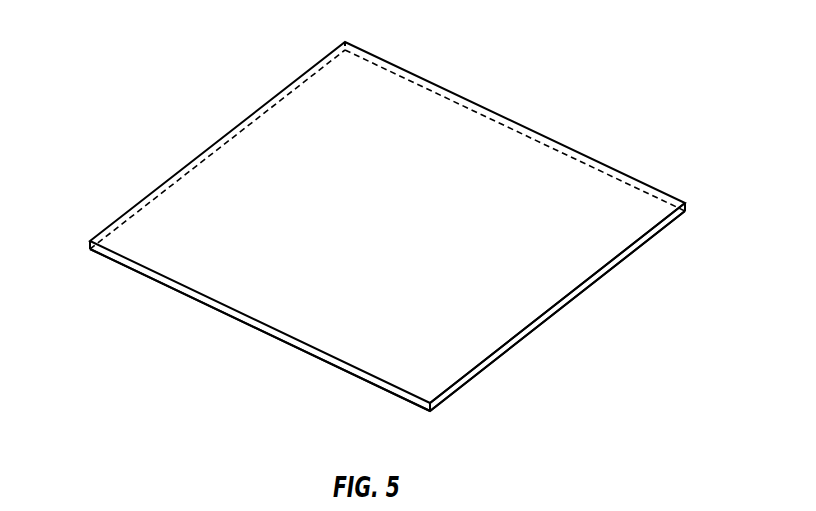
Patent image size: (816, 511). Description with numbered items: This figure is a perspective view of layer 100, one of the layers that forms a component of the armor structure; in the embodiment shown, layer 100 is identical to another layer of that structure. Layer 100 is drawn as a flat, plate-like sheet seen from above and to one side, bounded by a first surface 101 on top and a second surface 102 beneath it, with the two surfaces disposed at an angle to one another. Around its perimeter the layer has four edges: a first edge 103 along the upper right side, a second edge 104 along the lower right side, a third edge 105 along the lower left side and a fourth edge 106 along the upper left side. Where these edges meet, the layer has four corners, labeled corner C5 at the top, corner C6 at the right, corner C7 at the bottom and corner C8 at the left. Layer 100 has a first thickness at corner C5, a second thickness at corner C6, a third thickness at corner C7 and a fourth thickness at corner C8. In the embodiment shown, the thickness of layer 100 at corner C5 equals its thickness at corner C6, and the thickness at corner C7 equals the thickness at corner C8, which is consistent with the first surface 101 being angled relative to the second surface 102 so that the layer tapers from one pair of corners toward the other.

The layer 100 is at (566, 66).
The first surface 101 is at (438, 127).
The second surface 102 is at (618, 270).
The first edge 103 is at (582, 166).
The second edge 104 is at (482, 372).
The third edge 105 is at (258, 328).
The fourth edge 106 is at (220, 137).
The corner C5 is at (347, 42).
The corner C6 is at (688, 208).
The corner C7 is at (426, 406).
The corner C8 is at (88, 243).